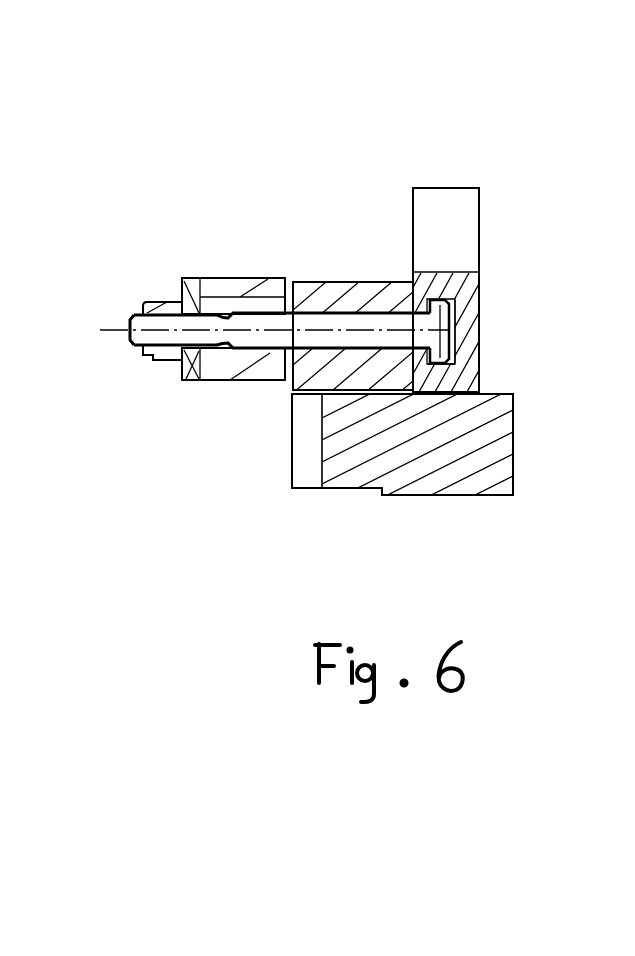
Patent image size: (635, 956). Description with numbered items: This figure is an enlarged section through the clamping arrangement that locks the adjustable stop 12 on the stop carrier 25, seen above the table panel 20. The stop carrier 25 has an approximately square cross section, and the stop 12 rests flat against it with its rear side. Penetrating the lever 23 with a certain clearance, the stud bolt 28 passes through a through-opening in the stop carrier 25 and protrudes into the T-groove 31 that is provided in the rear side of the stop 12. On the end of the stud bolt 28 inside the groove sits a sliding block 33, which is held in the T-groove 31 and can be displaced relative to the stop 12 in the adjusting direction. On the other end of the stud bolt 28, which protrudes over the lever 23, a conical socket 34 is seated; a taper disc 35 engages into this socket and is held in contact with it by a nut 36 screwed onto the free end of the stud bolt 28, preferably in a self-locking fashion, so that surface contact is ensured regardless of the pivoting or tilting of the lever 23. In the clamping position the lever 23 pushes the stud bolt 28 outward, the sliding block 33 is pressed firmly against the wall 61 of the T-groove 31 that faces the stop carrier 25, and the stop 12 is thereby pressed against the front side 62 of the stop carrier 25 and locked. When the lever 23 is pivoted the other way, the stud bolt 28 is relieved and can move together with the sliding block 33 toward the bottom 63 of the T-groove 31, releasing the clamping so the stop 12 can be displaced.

The adjustable stop 12 is at (477, 307).
The table panel 20 is at (472, 445).
The lever 23 is at (229, 288).
The stop carrier 25 is at (335, 300).
The stud bolt 28 is at (258, 337).
The T-groove 31 is at (441, 280).
The sliding block 33 is at (453, 362).
The conical socket 34 is at (188, 368).
The taper disc 35 is at (180, 364).
The nut 36 is at (168, 303).
The wall of the T-groove 61 is at (412, 298).
The front side of the stop carrier 62 is at (347, 395).
The bottom of the T-groove 63 is at (458, 325).